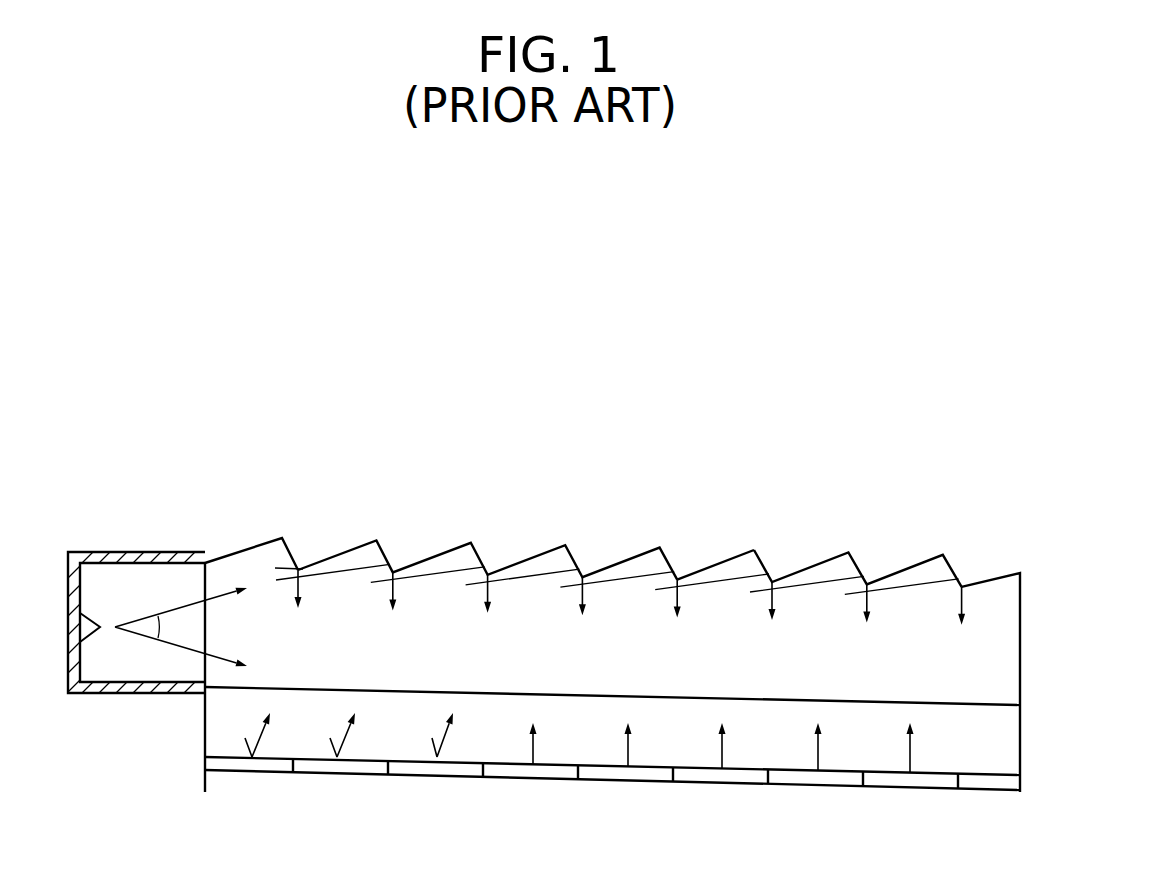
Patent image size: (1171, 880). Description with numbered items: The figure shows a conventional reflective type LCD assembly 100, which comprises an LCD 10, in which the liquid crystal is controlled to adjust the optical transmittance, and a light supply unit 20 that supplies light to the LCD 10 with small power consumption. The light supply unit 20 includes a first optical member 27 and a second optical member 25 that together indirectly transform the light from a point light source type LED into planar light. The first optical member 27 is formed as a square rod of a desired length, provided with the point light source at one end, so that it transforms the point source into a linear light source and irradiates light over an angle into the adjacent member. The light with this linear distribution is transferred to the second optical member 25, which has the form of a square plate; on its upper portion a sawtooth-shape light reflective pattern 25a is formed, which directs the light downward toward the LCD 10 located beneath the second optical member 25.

The reflective type LCD assembly 100 is at (875, 423).
The LCD 10 is at (1023, 745).
The light supply unit 20 is at (511, 528).
The second optical member 25 is at (618, 558).
The sawtooth-shape light reflective pattern 25a is at (712, 567).
The first optical member 27 is at (137, 570).